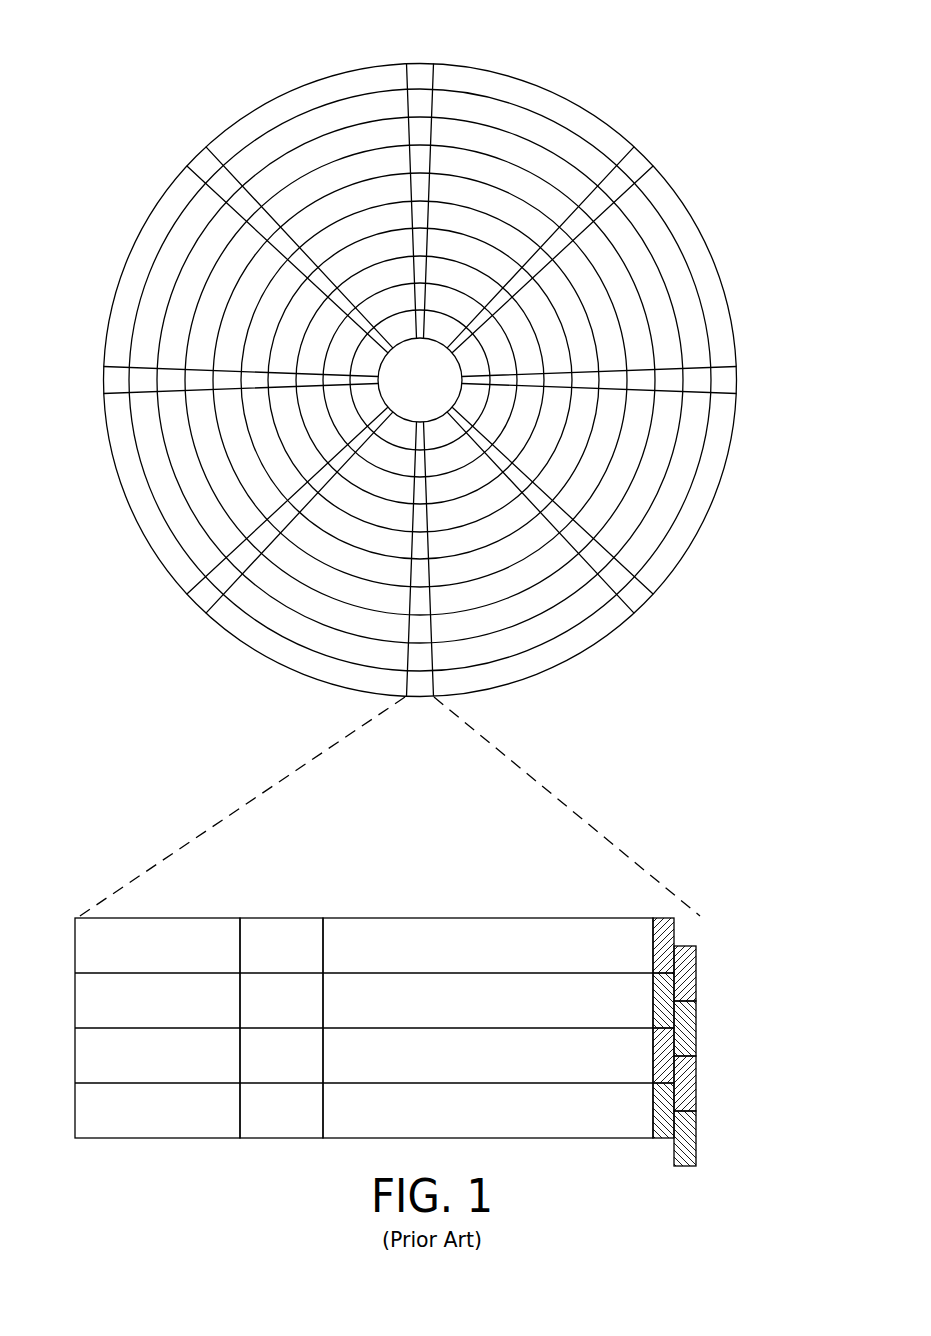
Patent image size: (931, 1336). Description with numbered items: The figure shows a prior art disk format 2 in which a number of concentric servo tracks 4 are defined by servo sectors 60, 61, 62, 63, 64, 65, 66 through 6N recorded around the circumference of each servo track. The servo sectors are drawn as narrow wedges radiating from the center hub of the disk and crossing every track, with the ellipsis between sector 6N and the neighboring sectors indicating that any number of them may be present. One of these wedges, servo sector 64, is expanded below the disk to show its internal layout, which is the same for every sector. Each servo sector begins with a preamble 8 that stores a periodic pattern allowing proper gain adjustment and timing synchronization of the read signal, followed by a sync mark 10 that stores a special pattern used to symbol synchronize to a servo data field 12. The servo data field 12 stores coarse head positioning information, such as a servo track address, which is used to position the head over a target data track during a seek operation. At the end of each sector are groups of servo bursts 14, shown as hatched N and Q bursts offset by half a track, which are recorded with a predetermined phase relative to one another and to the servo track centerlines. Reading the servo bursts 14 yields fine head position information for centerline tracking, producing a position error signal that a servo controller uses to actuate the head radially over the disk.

The disk format 2 is at (186, 69).
The servo tracks 4 is at (527, 128).
The servo sector 60 is at (420, 72).
The servo sector 61 is at (636, 164).
The servo sector 62 is at (728, 382).
The servo sector 63 is at (637, 598).
The servo sector 64 is at (280, 772).
The servo sector 65 is at (200, 600).
The servo sector 66 is at (110, 380).
The servo sector 6N is at (200, 161).
The preamble 8 is at (166, 918).
The sync mark 10 is at (284, 918).
The servo data field 12 is at (476, 918).
The servo bursts 14 is at (694, 913).